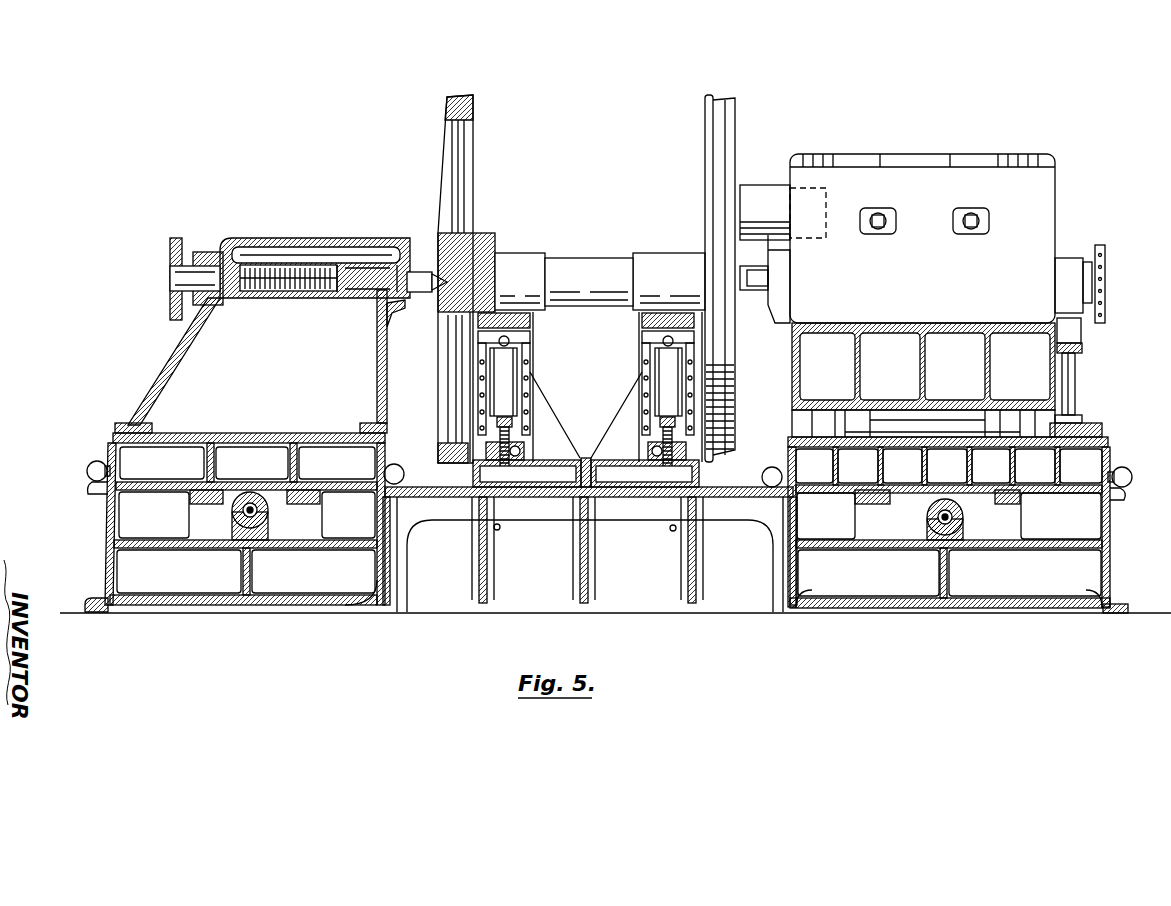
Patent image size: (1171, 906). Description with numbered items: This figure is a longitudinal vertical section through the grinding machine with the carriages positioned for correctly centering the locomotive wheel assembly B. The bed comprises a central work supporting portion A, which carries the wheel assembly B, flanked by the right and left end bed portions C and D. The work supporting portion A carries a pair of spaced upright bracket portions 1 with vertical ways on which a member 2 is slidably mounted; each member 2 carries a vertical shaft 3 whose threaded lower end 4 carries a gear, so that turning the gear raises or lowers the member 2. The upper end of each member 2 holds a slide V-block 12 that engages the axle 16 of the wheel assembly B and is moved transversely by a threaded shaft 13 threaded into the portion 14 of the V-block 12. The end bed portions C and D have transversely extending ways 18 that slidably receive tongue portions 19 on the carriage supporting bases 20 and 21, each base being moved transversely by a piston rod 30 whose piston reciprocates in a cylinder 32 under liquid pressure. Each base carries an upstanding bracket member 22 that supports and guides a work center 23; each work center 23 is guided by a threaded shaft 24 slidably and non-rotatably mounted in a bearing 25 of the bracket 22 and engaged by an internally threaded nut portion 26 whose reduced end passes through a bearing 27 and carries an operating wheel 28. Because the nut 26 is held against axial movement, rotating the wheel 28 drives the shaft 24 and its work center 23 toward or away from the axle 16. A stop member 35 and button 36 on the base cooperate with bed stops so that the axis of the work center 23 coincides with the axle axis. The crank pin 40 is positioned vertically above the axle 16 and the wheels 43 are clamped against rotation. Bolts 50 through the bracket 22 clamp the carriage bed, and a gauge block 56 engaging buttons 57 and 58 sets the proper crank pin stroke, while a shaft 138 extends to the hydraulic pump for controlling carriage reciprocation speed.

The bracket portion 1 is at (582, 446).
The member 2 is at (517, 374).
The vertical shaft 3 is at (512, 422).
The threaded lower end 4 is at (500, 461).
The slide V-block 12 is at (530, 322).
The threaded shaft 13 is at (530, 340).
The portion of the V-block 14 is at (478, 340).
The axle 16 is at (500, 254).
The transversely extending ways 18 is at (195, 500).
The tongue portions 19 is at (295, 502).
The carriage supporting base 20 is at (1108, 447).
The carriage supporting base 21 is at (112, 452).
The upstanding bracket member 22 is at (172, 372).
The work center 23 is at (418, 272).
The threaded shaft 24 is at (390, 265).
The bearing 25 is at (348, 256).
The nut portion 26 is at (286, 293).
The bearing 27 is at (212, 252).
The operating wheel 28 is at (175, 240).
The piston rod 30 is at (245, 512).
The cylinder 32 is at (258, 500).
The stop member 35 is at (87, 470).
The button 36 is at (88, 483).
The crank pin 40 is at (770, 190).
The wheels 43 is at (730, 108).
The bolts 50 is at (880, 213).
The gauge block 56 is at (1076, 382).
The button 57 is at (1083, 352).
The button 58 is at (1083, 421).
The shaft 138 is at (498, 530).
The central work supporting portion A is at (608, 497).
The locomotive wheel assembly B is at (553, 262).
The right end bed portion C is at (965, 607).
The left end bed portion D is at (178, 600).